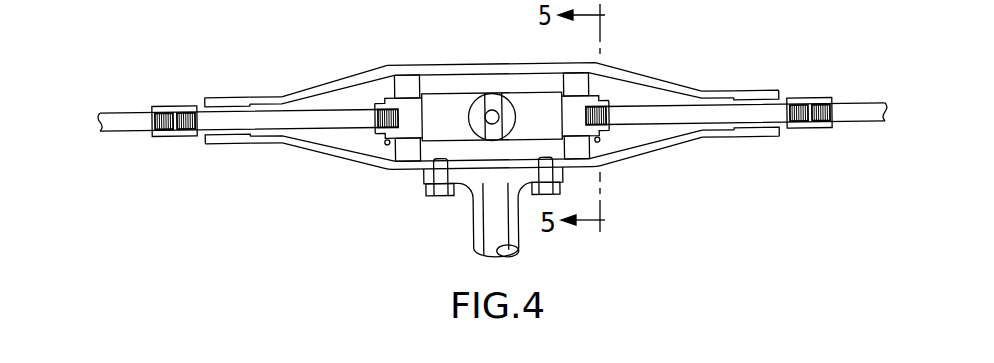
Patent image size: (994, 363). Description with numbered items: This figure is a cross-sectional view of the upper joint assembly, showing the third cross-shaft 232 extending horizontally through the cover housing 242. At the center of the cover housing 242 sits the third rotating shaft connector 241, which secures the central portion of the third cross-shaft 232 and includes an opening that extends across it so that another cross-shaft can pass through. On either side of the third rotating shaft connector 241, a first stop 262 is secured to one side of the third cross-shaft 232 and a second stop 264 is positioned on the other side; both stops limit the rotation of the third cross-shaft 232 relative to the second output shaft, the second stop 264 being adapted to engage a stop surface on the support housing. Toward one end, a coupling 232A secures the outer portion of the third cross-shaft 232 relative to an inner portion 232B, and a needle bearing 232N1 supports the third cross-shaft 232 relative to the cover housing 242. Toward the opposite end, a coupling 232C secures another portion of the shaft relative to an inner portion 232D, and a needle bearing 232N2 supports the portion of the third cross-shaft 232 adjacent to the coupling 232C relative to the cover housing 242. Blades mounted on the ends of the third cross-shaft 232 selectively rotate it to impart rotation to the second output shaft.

The third cross-shaft 232 is at (867, 113).
The coupling 232A is at (808, 98).
The inner portion of the third cross-shaft 232B is at (710, 107).
The coupling 232C is at (175, 105).
The inner portion 232D is at (297, 118).
The needle bearing 232N1 is at (753, 130).
The needle bearing 232N2 is at (222, 134).
The third rotating shaft connector 241 is at (528, 107).
The cover housing 242 is at (667, 80).
The first stop 262 is at (388, 143).
The second stop 264 is at (594, 138).